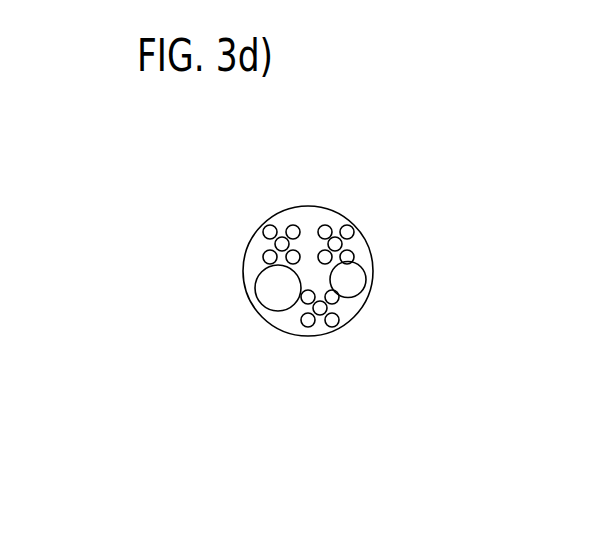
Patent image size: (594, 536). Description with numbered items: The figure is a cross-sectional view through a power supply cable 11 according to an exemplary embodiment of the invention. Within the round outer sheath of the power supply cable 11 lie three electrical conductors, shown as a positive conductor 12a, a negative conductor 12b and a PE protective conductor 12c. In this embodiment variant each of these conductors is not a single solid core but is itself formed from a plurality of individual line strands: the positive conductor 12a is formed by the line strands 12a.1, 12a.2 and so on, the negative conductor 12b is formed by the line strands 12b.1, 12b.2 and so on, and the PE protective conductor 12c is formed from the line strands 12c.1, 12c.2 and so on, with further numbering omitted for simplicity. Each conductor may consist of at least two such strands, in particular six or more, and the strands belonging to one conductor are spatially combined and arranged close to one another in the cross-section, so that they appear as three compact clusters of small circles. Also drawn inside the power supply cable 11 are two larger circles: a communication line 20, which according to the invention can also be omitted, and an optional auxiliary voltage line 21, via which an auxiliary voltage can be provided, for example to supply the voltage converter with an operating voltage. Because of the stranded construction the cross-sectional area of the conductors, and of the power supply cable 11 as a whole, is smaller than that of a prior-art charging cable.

The power supply cable 11 is at (481, 163).
The positive conductor 12a is at (211, 215).
The line strand 12a.1 is at (263, 226).
The line strand 12a.2 is at (293, 225).
The negative conductor 12b is at (382, 188).
The line strand 12b.1 is at (325, 225).
The line strand 12b.2 is at (352, 226).
The PE protective conductor 12c is at (321, 360).
The line strand 12c.1 is at (302, 328).
The line strand 12c.2 is at (338, 324).
The communication line 20 is at (367, 280).
The auxiliary voltage line 21 is at (256, 297).